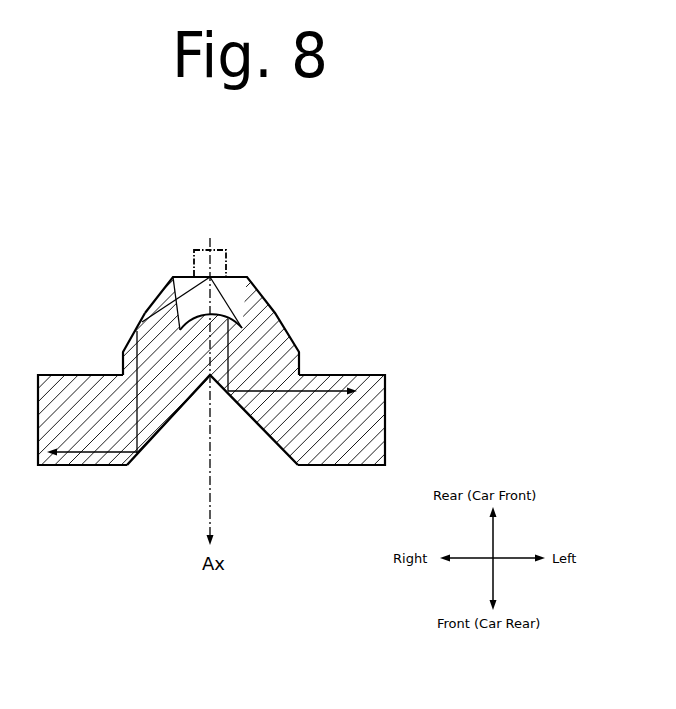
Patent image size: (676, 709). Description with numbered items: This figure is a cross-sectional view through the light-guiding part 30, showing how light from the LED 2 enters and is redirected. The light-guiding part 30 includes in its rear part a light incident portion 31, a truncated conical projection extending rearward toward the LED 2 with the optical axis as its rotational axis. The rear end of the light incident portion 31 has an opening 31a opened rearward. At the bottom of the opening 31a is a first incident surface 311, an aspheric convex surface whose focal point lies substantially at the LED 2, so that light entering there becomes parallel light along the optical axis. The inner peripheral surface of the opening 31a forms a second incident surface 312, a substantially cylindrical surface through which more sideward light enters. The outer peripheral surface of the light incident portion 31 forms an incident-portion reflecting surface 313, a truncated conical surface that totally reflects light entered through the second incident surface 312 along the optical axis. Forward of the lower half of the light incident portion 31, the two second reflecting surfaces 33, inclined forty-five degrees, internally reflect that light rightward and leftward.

The light-guiding part 30 is at (345, 238).
The light incident portion 31 is at (295, 305).
The first incident surface 311 is at (242, 328).
The opening 31a is at (231, 283).
The second incident surface 312 is at (185, 292).
The incident-portion reflecting surface 313 is at (147, 316).
The second reflecting surfaces 33 is at (258, 424).
The LED 2 is at (203, 248).